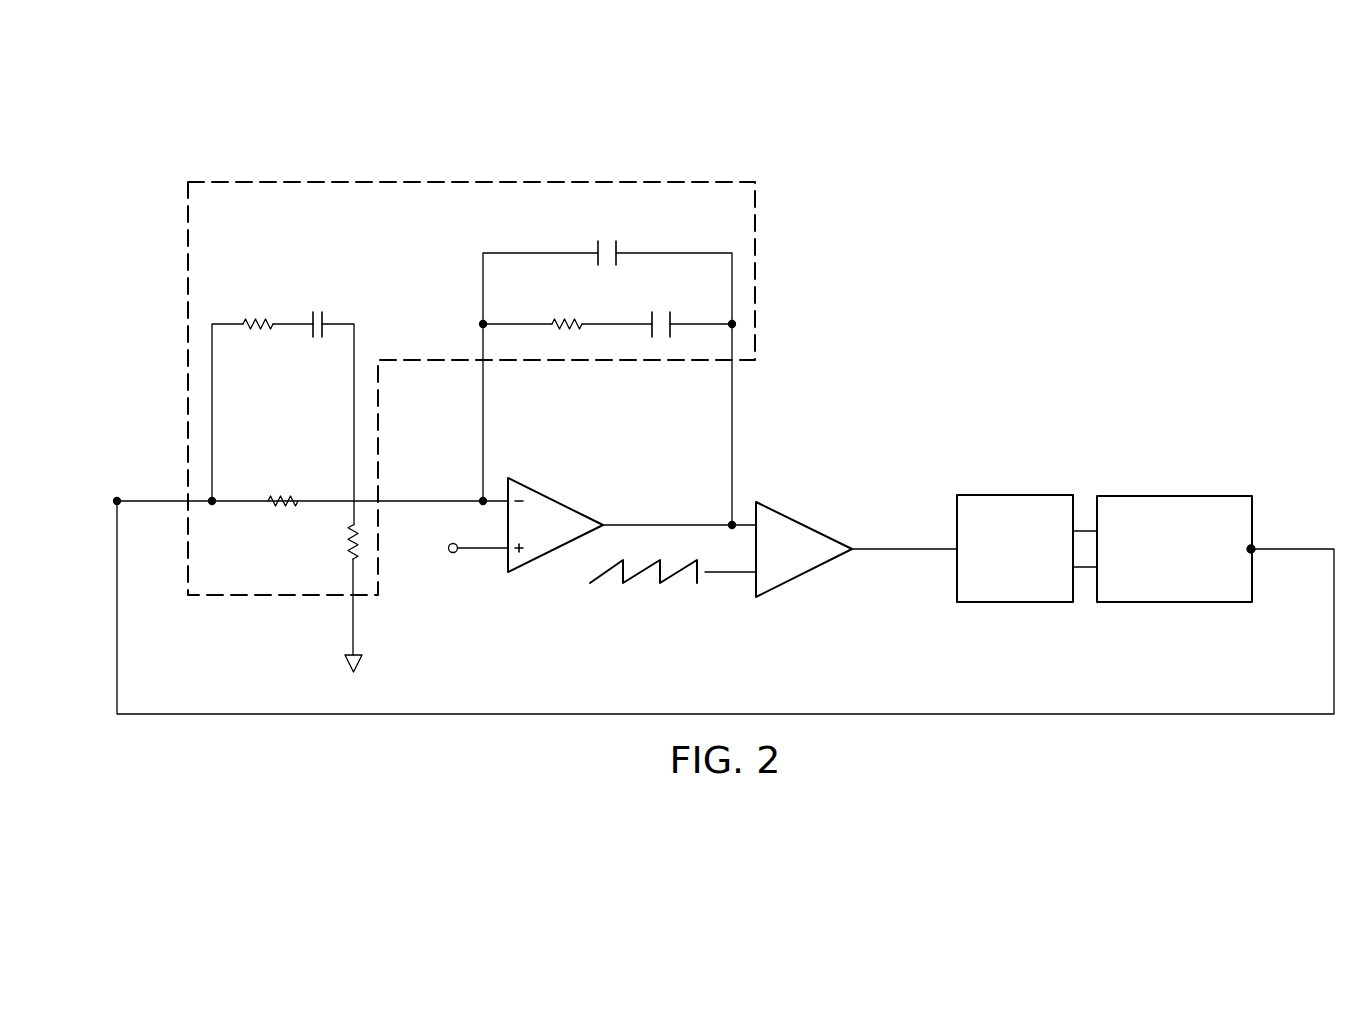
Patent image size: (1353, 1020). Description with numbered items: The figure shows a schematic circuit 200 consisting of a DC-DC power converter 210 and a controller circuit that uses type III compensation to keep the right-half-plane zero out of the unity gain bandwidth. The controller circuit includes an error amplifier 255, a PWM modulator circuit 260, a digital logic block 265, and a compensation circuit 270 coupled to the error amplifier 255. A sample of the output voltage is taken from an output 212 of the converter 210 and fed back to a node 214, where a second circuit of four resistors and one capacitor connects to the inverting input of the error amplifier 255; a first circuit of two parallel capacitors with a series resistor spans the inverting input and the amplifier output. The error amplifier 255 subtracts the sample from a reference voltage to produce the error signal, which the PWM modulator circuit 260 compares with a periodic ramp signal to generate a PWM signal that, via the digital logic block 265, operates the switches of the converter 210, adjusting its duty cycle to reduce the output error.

The circuit 200 is at (1006, 153).
The compensation circuit 270 is at (470, 174).
The node 214 is at (114, 496).
The error amplifier 255 is at (557, 497).
The PWM modulator circuit 260 is at (803, 574).
The digital logic block 265 is at (1015, 604).
The power converter 210 is at (1175, 604).
The output 212 is at (1258, 558).